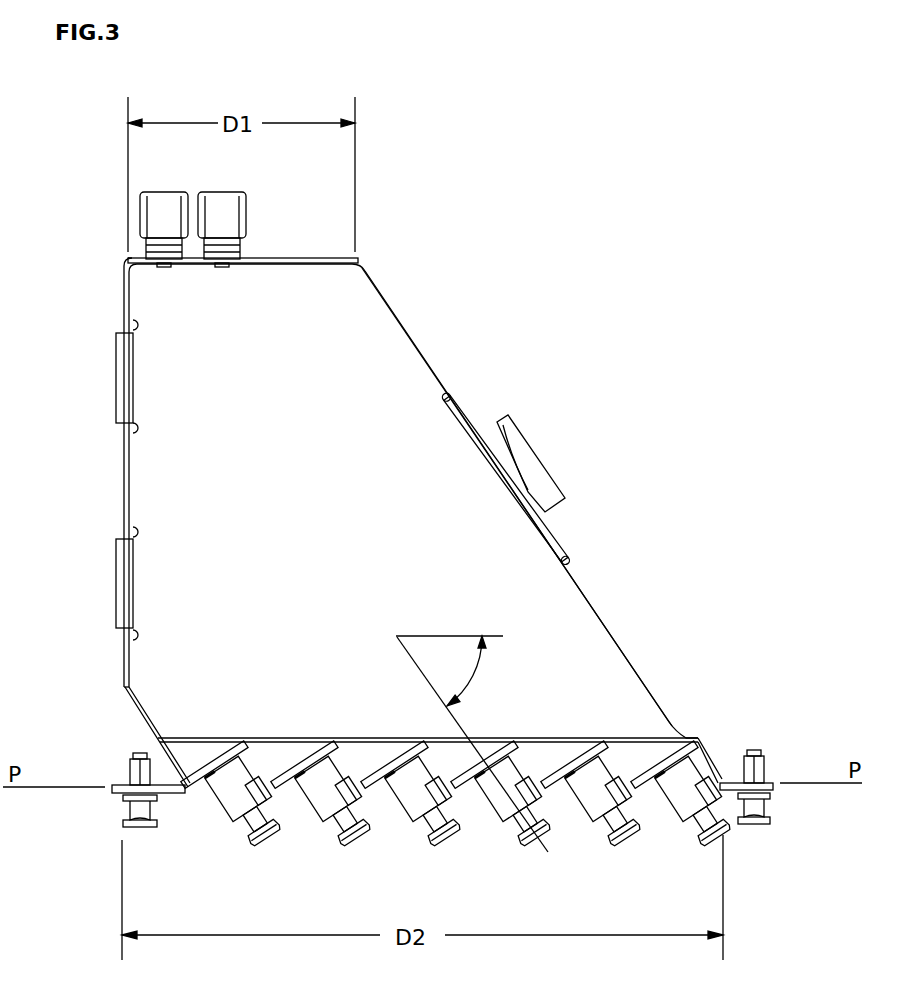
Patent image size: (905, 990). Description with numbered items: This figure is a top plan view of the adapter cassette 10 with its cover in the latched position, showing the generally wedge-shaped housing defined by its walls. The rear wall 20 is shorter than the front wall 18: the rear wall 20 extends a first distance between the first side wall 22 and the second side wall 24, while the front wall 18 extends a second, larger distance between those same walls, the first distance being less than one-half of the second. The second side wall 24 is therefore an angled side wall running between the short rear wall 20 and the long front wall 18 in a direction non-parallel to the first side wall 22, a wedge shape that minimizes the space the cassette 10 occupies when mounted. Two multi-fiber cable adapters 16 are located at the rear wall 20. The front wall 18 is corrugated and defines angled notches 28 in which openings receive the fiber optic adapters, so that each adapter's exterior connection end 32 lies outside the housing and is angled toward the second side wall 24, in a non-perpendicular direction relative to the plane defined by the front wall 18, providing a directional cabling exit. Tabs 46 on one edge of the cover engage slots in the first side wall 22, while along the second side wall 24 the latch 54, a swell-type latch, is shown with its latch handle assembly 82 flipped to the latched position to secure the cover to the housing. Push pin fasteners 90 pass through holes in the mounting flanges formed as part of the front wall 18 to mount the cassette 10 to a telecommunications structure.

The adapter cassette 10 is at (575, 250).
The multi-fiber cable adapter 16 is at (222, 207).
The front wall 18 is at (470, 792).
The rear wall 20 is at (290, 258).
The first side wall 22 is at (122, 474).
The second side wall 24 is at (598, 600).
The angled notches 28 is at (305, 752).
The exterior connection end 32 is at (245, 815).
The tabs 46 is at (115, 366).
The latch 54 is at (538, 407).
The latch handle assembly 82 is at (545, 474).
The fasteners 90 is at (141, 828).